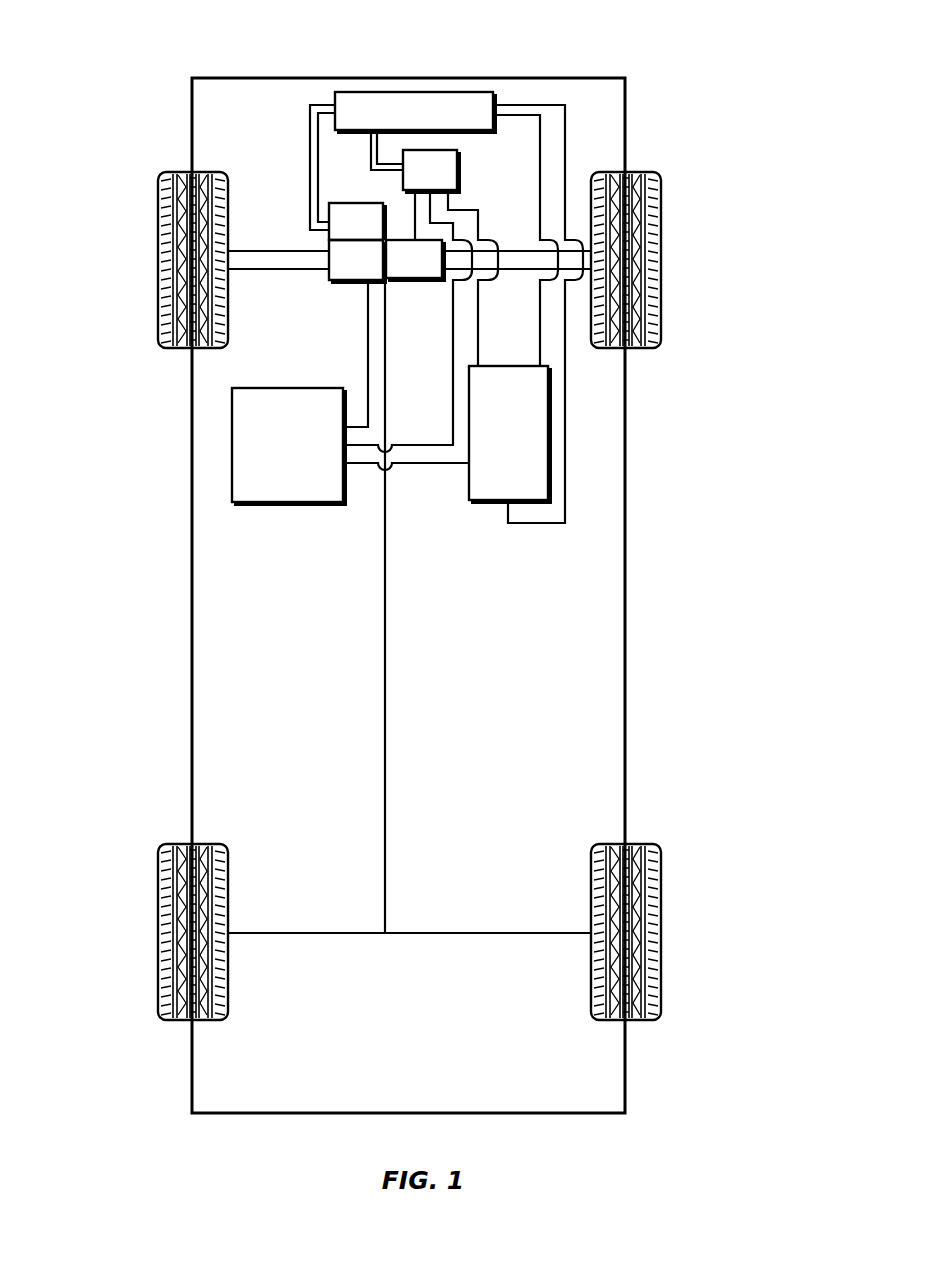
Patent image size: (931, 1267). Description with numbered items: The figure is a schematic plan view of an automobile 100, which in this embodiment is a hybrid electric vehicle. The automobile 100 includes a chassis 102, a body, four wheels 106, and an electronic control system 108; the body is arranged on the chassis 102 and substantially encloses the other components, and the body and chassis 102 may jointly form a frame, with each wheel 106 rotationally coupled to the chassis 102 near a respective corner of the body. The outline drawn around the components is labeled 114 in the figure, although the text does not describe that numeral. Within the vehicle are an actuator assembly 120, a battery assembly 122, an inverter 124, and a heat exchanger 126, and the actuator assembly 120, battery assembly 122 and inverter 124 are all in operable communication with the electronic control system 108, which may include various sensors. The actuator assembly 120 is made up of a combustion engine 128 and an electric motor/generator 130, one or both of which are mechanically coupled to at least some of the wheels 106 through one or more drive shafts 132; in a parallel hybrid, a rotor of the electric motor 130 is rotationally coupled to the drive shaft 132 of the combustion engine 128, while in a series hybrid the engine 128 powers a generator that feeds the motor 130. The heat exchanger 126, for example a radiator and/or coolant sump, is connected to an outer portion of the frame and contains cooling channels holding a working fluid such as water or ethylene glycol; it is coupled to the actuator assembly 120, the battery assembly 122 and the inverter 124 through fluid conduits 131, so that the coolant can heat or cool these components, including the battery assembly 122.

The automobile 100 is at (663, 58).
The chassis 102 is at (385, 637).
The wheels 106 is at (165, 238).
The electronic control system 108 is at (269, 458).
The vehicle body 114 is at (192, 445).
The actuator assembly 120 is at (405, 292).
The battery assembly 122 is at (490, 446).
The inverter 124 is at (412, 183).
The heat exchanger 126 is at (396, 125).
The combustion engine 128 is at (338, 235).
The electric motor/generator 130 is at (396, 273).
The fluid conduits 131 is at (530, 105).
The drive shafts 132 is at (247, 258).